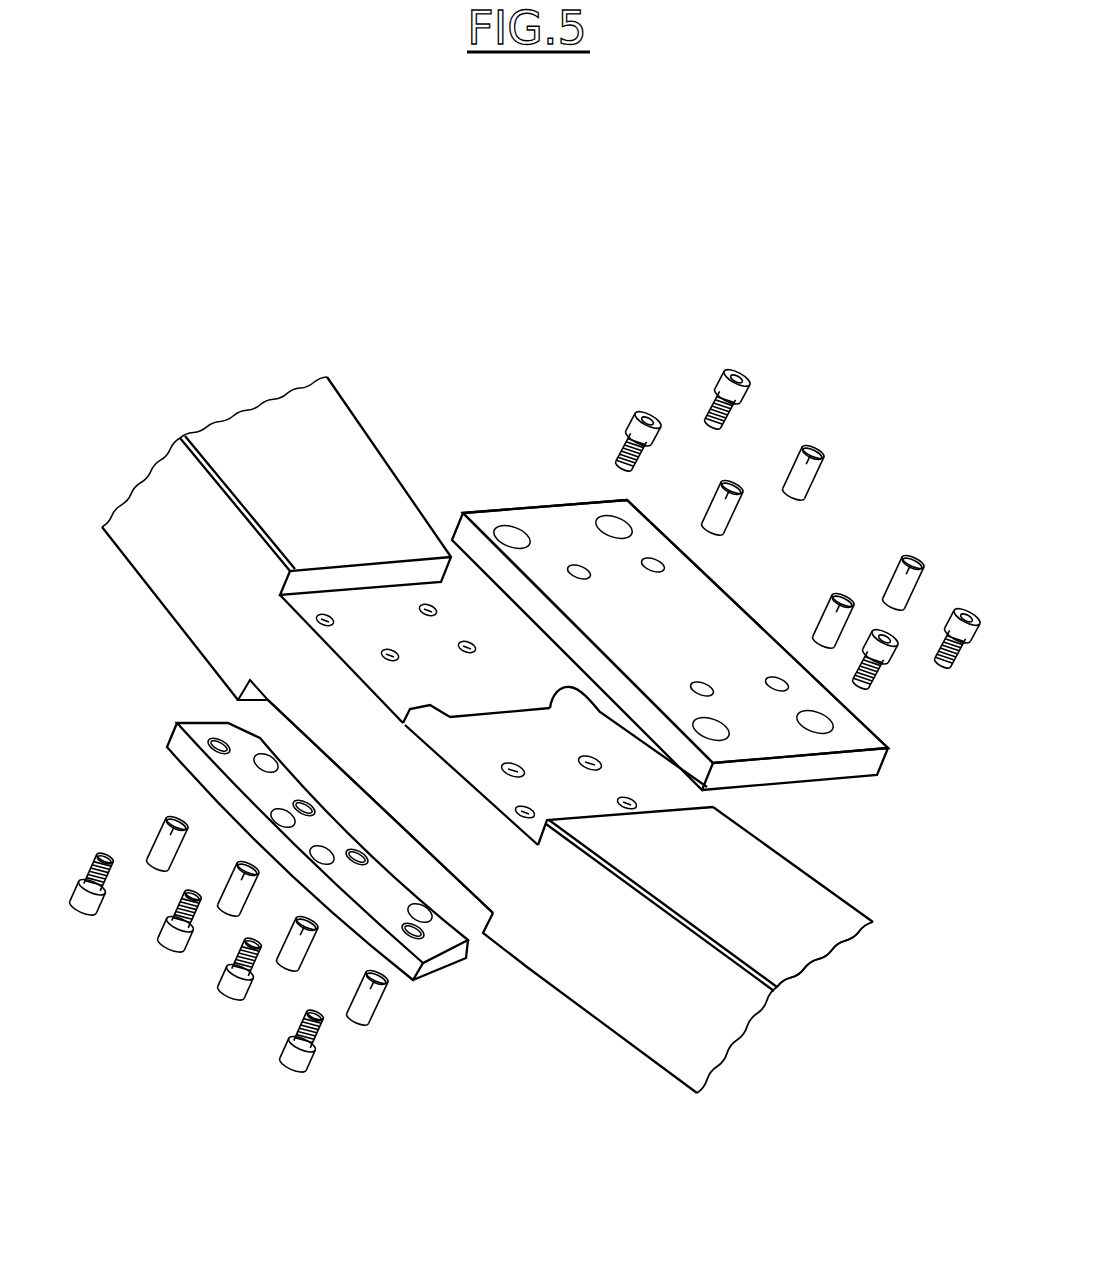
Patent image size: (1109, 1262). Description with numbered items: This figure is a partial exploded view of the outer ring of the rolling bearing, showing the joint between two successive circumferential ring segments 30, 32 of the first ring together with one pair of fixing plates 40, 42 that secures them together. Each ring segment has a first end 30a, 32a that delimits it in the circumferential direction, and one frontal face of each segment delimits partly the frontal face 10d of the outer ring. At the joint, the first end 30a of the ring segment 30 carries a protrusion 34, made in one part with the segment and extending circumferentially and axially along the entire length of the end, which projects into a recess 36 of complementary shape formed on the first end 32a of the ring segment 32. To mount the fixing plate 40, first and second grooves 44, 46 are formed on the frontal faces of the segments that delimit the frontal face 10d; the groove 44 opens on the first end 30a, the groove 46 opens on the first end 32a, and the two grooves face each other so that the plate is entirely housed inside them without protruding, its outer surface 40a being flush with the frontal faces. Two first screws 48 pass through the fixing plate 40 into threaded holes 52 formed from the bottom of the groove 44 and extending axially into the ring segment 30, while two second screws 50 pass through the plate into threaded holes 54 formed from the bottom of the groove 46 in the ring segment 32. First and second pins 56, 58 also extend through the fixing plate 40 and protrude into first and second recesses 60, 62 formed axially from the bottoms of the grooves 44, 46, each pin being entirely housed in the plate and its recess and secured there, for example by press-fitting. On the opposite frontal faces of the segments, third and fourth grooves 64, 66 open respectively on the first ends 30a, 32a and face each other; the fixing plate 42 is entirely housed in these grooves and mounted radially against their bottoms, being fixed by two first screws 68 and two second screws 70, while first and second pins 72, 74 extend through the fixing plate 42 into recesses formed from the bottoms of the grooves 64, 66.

The frontal face of the outer ring 10d is at (828, 928).
The ring segment 30 is at (818, 897).
The first end of the ring segment 30 30a is at (715, 786).
The ring segment 32 is at (327, 405).
The first end of the ring segment 32 32a is at (517, 704).
The protrusion 34 is at (443, 728).
The recess 36 is at (421, 720).
The fixing plate 40 is at (553, 517).
The outer surface of the fixing plate 40a is at (683, 643).
The fixing plate 42 is at (170, 751).
The first groove 44 is at (486, 780).
The second groove 46 is at (340, 658).
The first screws 48 is at (943, 672).
The second screws 50 is at (737, 376).
The threaded hole 52 is at (628, 810).
The threaded hole 54 is at (426, 606).
The first pins 56 is at (907, 563).
The second pins 58 is at (800, 453).
The first recesses 60 is at (638, 805).
The second recesses 62 is at (457, 643).
The third groove 64 is at (412, 858).
The fourth groove 66 is at (280, 723).
The first screws 68 is at (287, 1057).
The second screws 70 is at (158, 937).
The first pins 72 is at (366, 1008).
The second pins 74 is at (235, 875).